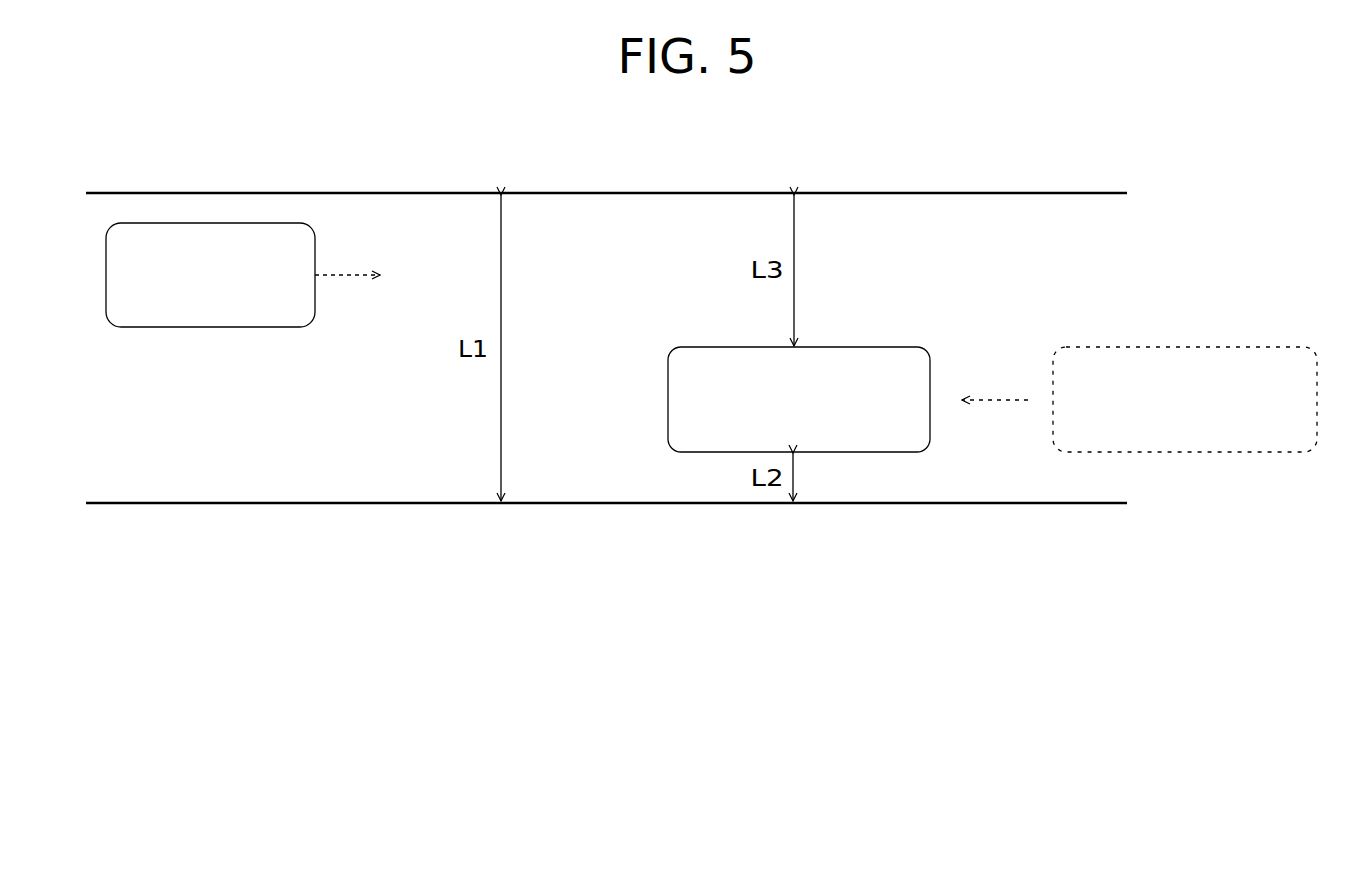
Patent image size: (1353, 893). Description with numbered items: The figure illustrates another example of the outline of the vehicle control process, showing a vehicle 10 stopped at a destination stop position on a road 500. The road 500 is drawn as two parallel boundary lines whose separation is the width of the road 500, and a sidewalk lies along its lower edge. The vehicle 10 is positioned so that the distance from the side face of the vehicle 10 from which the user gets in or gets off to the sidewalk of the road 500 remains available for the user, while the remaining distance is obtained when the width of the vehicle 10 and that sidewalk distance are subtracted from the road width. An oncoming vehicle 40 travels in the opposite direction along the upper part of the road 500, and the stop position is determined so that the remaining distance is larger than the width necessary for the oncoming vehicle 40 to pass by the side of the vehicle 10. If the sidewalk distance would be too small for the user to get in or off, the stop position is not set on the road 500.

The vehicle 10 is at (863, 362).
The oncoming vehicle 40 is at (300, 259).
The road 500 is at (160, 488).